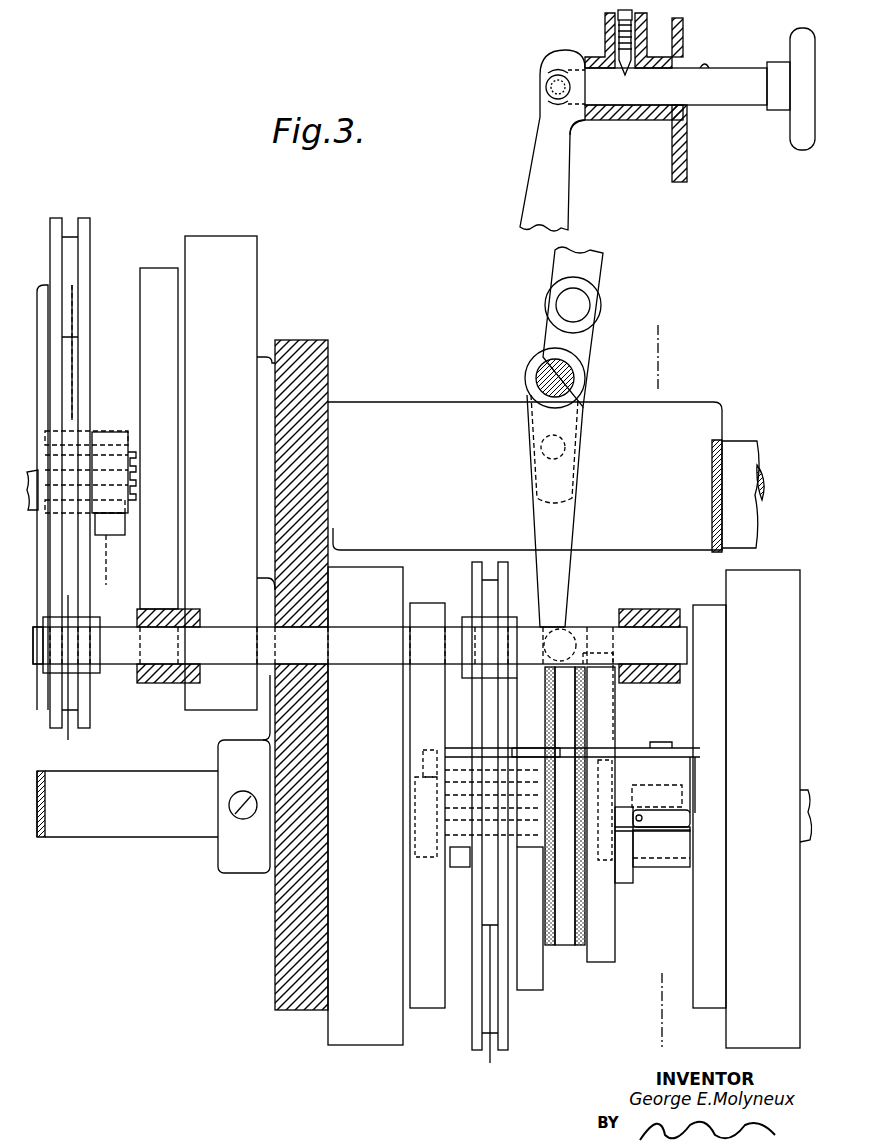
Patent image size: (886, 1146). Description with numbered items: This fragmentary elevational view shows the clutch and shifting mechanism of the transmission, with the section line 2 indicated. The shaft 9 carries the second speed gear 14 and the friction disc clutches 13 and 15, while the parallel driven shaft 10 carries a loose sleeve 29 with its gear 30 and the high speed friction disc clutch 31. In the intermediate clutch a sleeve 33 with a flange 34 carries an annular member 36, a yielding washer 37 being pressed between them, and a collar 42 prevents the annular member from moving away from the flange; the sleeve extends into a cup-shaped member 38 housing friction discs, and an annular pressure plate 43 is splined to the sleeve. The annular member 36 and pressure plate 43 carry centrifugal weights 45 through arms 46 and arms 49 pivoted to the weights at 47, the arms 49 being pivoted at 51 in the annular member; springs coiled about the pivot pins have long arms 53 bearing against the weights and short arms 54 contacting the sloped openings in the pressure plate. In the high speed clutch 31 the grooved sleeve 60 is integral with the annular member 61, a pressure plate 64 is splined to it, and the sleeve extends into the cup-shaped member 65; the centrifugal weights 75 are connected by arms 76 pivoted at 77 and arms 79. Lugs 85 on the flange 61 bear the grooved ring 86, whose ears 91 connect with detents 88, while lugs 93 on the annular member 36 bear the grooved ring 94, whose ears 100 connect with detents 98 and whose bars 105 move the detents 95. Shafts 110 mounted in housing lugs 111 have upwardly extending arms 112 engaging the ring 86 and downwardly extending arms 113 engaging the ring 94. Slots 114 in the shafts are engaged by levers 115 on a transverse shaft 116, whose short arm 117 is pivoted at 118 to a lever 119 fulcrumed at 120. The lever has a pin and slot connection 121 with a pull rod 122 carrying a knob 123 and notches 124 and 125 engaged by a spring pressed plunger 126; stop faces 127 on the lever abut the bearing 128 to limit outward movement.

The section line 2 is at (664, 684).
The shaft 9 is at (130, 830).
The shaft 10 is at (742, 442).
The friction disc clutch 13 is at (661, 913).
The second speed gear 14 is at (288, 1010).
The friction disc clutch 15 is at (467, 975).
The sleeve 29 is at (462, 402).
The gear 30 is at (305, 341).
The friction disc clutch 31 is at (118, 385).
The sleeve 33 is at (680, 867).
The flange 34 is at (563, 948).
The annular member 36 is at (600, 963).
The washer 37 is at (585, 928).
The cup-shaped member 38 is at (767, 575).
The collar 42 is at (625, 883).
The annular pressure plate 43 is at (422, 1010).
The centrifugal weights 45 is at (740, 828).
The arms 46 is at (531, 748).
The pivot 47 is at (480, 870).
The arms 49 is at (432, 760).
The pivot 51 is at (435, 755).
The long arms 53 is at (420, 793).
The short arms 54 is at (443, 872).
The grooved sleeve 60 is at (133, 545).
The annular member 61 is at (42, 297).
The annular pressure plate 64 is at (165, 335).
The cup-shaped member 65 is at (248, 255).
The centrifugal weights 75 is at (138, 489).
The arms 76 is at (140, 494).
The pivot 77 is at (112, 571).
The arms 79 is at (128, 425).
The lugs 85 is at (140, 505).
The grooved ring 86 is at (90, 697).
The detents 88 is at (140, 513).
The ears 91 is at (145, 540).
The lugs 93 is at (440, 845).
The grooved ring 94 is at (508, 1025).
The detents 95 is at (440, 740).
The detents 98 is at (440, 880).
The ears 100 is at (445, 900).
The bars 105 is at (590, 748).
The shafts 110 is at (358, 630).
The lugs 111 is at (165, 685).
The upwardly extending arms 112 is at (72, 676).
The downwardly extending arms 113 is at (492, 1011).
The slots 114 is at (585, 625).
The levers 115 is at (574, 505).
The transverse shaft 116 is at (585, 378).
The short arm 117 is at (530, 435).
The pivot 118 is at (566, 447).
The lever 119 is at (558, 217).
The fulcrum 120 is at (570, 305).
The pin and slot connection 121 is at (548, 90).
The pull rod 122 is at (712, 97).
The knob 123 is at (800, 145).
The notch 124 is at (630, 68).
The notch 125 is at (706, 66).
The spring pressed plunger 126 is at (618, 65).
The stop faces 127 is at (592, 120).
The bearing 128 is at (633, 120).